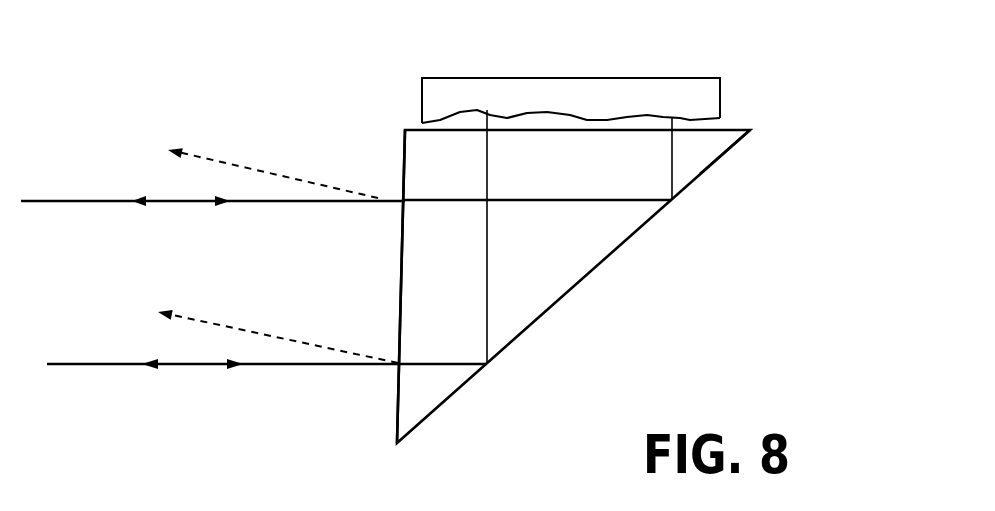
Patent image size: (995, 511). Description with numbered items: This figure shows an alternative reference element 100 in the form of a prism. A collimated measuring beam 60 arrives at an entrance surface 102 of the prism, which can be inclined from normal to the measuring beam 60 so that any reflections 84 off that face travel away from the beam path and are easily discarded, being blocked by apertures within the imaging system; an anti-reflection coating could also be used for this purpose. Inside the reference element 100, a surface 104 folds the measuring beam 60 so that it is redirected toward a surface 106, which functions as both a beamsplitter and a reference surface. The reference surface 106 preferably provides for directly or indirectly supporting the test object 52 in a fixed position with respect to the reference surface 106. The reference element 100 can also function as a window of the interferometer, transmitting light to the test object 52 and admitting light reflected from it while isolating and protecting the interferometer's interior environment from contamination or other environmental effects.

The test object 52 is at (533, 85).
The collimated measuring beam 60 is at (107, 205).
The reflections 84 is at (238, 166).
The reference element 100 is at (602, 223).
The entrance surface 102 is at (400, 260).
The surface 104 is at (555, 303).
The reference surface 106 is at (728, 128).